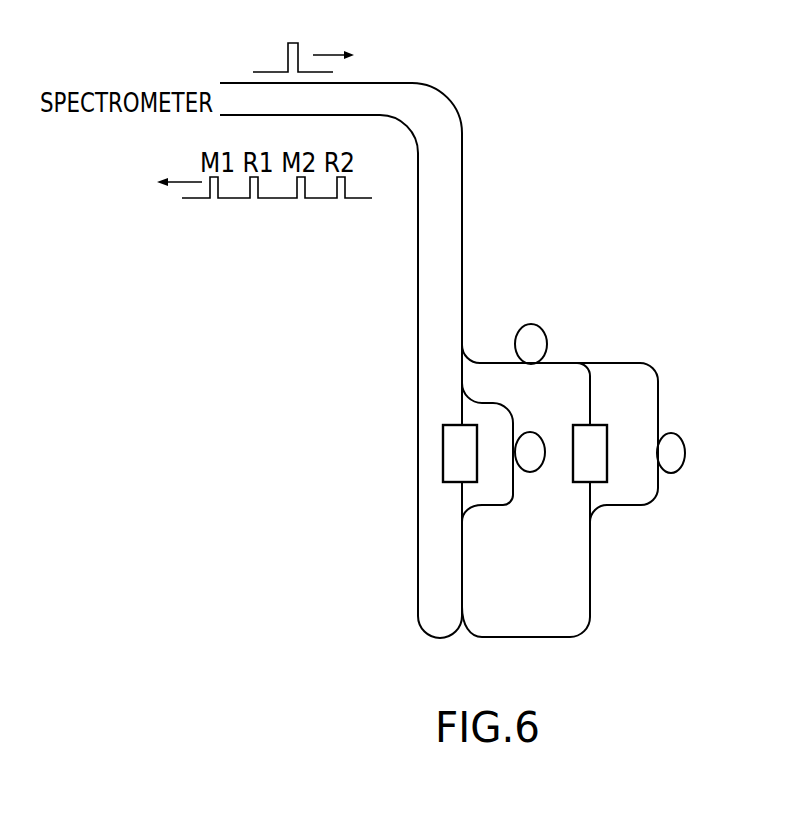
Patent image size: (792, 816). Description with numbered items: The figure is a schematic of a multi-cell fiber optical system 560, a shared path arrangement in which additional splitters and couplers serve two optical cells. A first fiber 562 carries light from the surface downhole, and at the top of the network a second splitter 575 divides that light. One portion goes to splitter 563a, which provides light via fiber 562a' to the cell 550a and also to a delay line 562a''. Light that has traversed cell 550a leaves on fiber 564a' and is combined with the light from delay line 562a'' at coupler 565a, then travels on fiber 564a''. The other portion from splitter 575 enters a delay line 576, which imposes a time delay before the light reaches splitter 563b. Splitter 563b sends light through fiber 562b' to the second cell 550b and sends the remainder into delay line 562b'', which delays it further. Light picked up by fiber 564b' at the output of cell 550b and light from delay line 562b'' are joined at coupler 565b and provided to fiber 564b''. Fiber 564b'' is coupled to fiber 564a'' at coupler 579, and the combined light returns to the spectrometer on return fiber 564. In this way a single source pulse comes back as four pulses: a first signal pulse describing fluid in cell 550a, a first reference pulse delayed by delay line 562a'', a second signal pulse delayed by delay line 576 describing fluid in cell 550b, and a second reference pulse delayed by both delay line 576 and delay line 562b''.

The multi-cell fiber optical system 560 is at (233, 390).
The first fiber 562 is at (392, 83).
The return fiber 564 is at (418, 231).
The second splitter 575 is at (463, 343).
The delay line 576 is at (548, 316).
The splitter 563a is at (461, 380).
The first sample inlet channel segment 562a' is at (398, 385).
The delay line 562a'' is at (503, 489).
The optic cell 550a is at (443, 465).
The first return channel segment 564a' is at (398, 496).
The coupler 565a is at (461, 527).
The coupler 579 is at (438, 638).
The fiber 564a'' is at (511, 645).
The fiber 564b'' is at (597, 643).
The splitter 563b is at (570, 362).
The fiber 562b' is at (665, 396).
The delay line 562b'' is at (673, 442).
The second cell 550b is at (607, 467).
The fiber 564b' is at (665, 507).
The coupler 565b is at (590, 517).